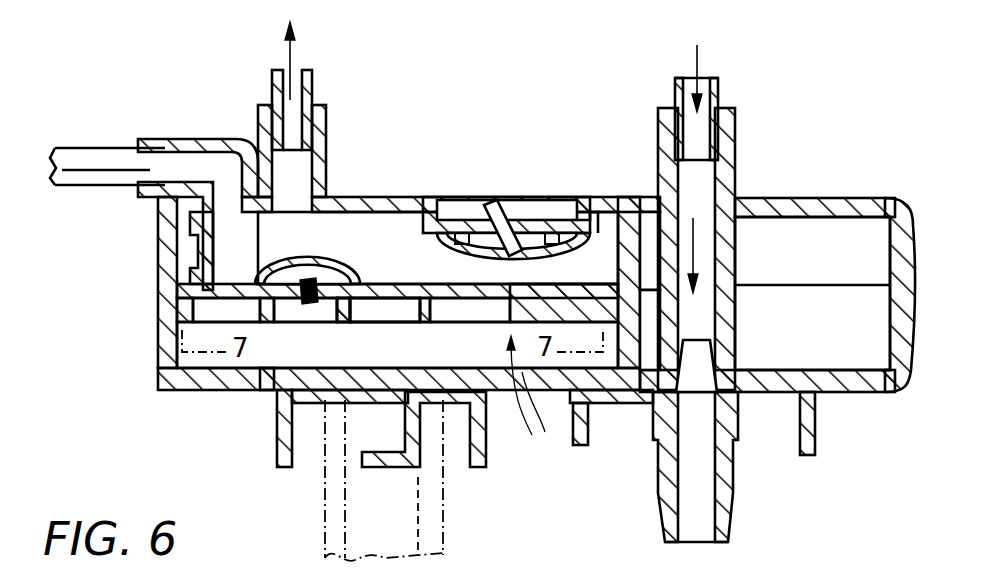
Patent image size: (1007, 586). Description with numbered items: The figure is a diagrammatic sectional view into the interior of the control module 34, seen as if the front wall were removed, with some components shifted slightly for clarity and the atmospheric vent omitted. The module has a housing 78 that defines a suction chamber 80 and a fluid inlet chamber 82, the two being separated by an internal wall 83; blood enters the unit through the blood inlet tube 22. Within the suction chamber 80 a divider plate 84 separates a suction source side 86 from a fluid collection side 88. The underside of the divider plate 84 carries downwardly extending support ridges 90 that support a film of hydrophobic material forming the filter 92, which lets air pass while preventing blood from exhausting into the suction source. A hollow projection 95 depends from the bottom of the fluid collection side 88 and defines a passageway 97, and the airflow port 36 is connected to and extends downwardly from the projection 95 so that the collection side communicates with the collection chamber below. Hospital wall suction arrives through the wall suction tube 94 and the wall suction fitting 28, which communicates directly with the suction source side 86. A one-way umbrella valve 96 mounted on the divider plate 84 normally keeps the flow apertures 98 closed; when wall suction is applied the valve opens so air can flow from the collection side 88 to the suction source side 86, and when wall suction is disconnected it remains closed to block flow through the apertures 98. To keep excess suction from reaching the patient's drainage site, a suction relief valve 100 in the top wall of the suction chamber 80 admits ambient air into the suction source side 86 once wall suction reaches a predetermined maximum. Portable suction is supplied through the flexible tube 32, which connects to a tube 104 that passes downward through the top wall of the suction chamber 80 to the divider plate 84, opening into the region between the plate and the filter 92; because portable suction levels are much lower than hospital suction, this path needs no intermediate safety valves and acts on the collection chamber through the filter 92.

The blood inlet tube 22 is at (718, 88).
The wall suction fitting 28 is at (258, 125).
The flexible tube 32 is at (100, 155).
The control module 34 is at (478, 158).
The airflow port 36 is at (450, 533).
The housing 78 is at (361, 190).
The suction chamber 80 is at (531, 399).
The fluid inlet chamber 82 is at (834, 261).
The internal wall 83 is at (640, 265).
The divider plate 84 is at (402, 304).
The suction source side 86 is at (412, 267).
The fluid collection side 88 is at (444, 367).
The support ridges 90 is at (440, 318).
The hydrophobic filter 92 is at (368, 320).
The wall suction tube 94 is at (270, 88).
The hollow projection 95 is at (420, 470).
The umbrella valve 96 is at (438, 248).
The passageway 97 is at (363, 433).
The flow apertures 98 is at (277, 445).
The suction relief valve 100 is at (548, 188).
The tube 104 is at (205, 242).